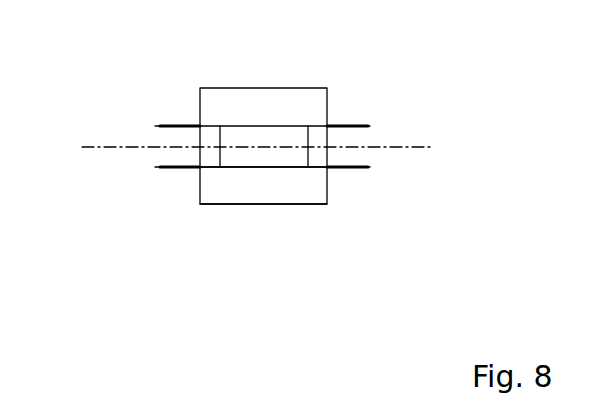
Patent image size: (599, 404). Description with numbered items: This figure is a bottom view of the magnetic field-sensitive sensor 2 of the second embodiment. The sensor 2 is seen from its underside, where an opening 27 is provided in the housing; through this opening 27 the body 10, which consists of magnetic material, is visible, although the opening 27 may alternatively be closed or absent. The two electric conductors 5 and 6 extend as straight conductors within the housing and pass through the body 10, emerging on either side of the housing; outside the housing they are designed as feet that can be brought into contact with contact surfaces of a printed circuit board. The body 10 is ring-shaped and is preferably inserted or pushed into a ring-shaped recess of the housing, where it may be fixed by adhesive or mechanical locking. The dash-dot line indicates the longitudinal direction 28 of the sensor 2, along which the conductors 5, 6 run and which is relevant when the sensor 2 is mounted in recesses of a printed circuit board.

The magnetic field-sensitive sensor 2 is at (422, 54).
The electric conductor 5 is at (168, 125).
The electric conductor 6 is at (162, 168).
The body 10 is at (252, 137).
The opening 27 is at (262, 168).
The longitudinal direction 28 is at (110, 146).